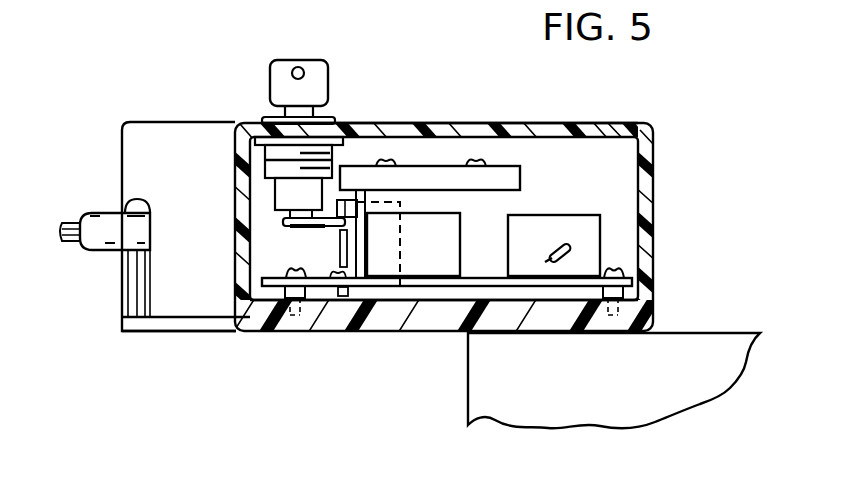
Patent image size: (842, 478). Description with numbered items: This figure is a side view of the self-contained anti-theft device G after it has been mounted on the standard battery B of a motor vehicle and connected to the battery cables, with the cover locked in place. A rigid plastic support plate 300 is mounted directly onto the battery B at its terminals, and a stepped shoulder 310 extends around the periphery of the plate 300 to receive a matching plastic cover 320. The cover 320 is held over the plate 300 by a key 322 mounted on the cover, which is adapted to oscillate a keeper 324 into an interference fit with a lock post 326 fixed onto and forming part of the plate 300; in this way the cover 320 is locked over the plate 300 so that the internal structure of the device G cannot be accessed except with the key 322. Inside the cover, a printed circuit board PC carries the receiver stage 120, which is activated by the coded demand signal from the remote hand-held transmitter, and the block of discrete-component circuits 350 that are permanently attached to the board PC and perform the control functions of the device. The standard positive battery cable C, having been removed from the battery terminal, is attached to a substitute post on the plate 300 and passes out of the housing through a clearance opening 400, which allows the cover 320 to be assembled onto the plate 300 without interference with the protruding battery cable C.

The cover 320 is at (598, 126).
The key 322 is at (318, 86).
The keeper 324 is at (332, 225).
The lock post 326 is at (334, 270).
The receiver stage 120 is at (450, 236).
The circuits 350 is at (588, 228).
The support plate 300 is at (308, 318).
The stepped shoulder 310 is at (220, 320).
The clearance openings 400 is at (148, 319).
The self-contained anti-theft device G is at (452, 121).
The positive battery cable C is at (95, 256).
The printed circuit board PC is at (462, 290).
The battery B is at (721, 328).